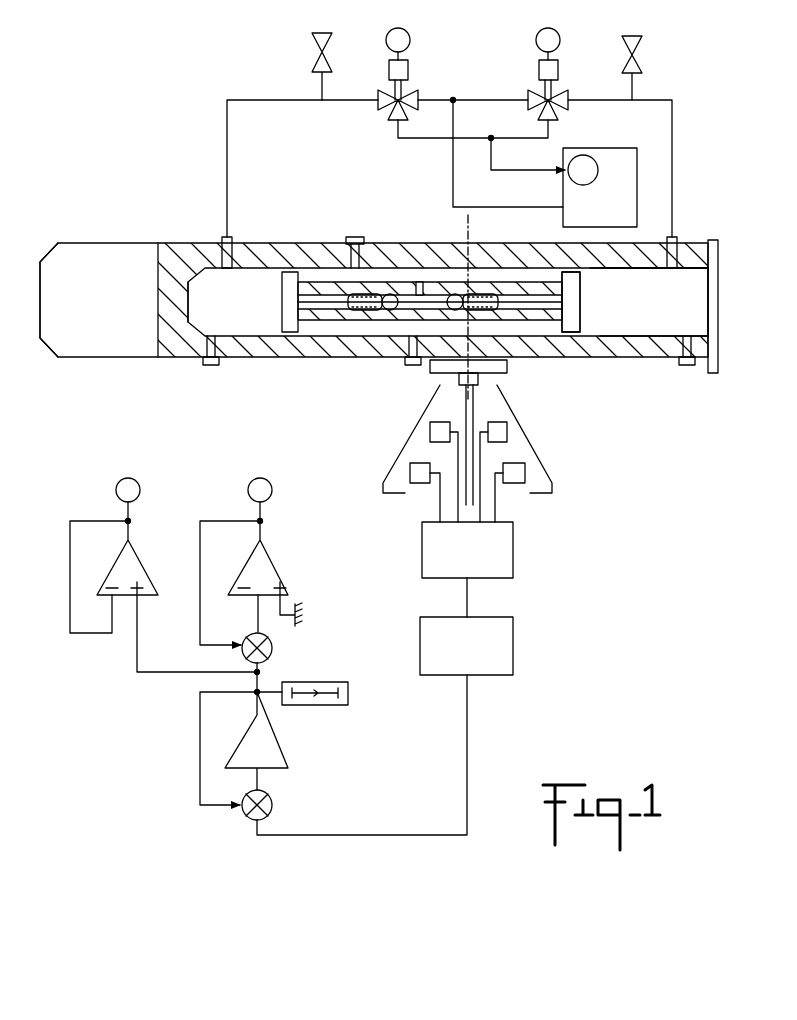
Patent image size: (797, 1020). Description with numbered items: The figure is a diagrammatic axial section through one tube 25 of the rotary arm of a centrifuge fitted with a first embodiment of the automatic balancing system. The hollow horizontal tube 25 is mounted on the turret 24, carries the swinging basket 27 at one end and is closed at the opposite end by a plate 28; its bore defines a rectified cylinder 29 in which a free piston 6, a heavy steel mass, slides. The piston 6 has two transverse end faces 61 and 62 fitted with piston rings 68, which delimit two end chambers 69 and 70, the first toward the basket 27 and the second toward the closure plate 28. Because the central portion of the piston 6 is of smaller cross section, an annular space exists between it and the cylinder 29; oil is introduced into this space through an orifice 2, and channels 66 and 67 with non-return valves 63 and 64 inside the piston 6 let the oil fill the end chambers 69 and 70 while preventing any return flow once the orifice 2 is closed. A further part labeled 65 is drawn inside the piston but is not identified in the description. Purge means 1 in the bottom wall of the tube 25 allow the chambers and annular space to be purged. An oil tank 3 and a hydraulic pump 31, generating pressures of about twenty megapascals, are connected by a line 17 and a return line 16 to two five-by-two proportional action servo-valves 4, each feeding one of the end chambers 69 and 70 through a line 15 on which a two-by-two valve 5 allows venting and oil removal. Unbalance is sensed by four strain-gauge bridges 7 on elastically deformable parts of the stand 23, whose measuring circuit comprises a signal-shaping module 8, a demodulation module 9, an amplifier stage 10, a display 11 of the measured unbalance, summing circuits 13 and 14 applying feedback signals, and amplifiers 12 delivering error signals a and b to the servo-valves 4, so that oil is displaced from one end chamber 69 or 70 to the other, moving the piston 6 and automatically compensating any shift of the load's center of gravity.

The purge means 1 is at (211, 366).
The orifice 2 is at (355, 237).
The oil tank 3 is at (637, 168).
The proportional action servo-valve 4 is at (405, 70).
The valve 5 is at (320, 38).
The free piston 6 is at (410, 285).
The strain-gauge bridge 7 is at (415, 468).
The signal-shaping module 8 is at (513, 553).
The demodulation module 9 is at (505, 650).
The amplifier stage 10 is at (270, 758).
The display 11 is at (321, 705).
The amplifier 12 is at (138, 572).
The summing circuit 13 is at (272, 804).
The summing circuit 14 is at (272, 648).
The line 15 is at (226, 140).
The return line 16 is at (523, 190).
The line 17 is at (522, 152).
The stand 23 is at (553, 475).
The turret 24 is at (500, 375).
The tube 25 is at (200, 243).
The swinging basket 27 is at (42, 344).
The plate 28 is at (718, 356).
The cylinder 29 is at (608, 272).
The hydraulic pump 31 is at (587, 158).
The transverse end face 61 is at (285, 292).
The transverse end face 62 is at (580, 320).
The non-return valve 63 is at (372, 316).
The non-return valve 64 is at (490, 290).
The bore 65 is at (432, 290).
The channel 66 is at (319, 316).
The channel 67 is at (535, 318).
The piston ring 68 is at (292, 270).
The end chamber 69 is at (200, 296).
The end chamber 70 is at (697, 292).